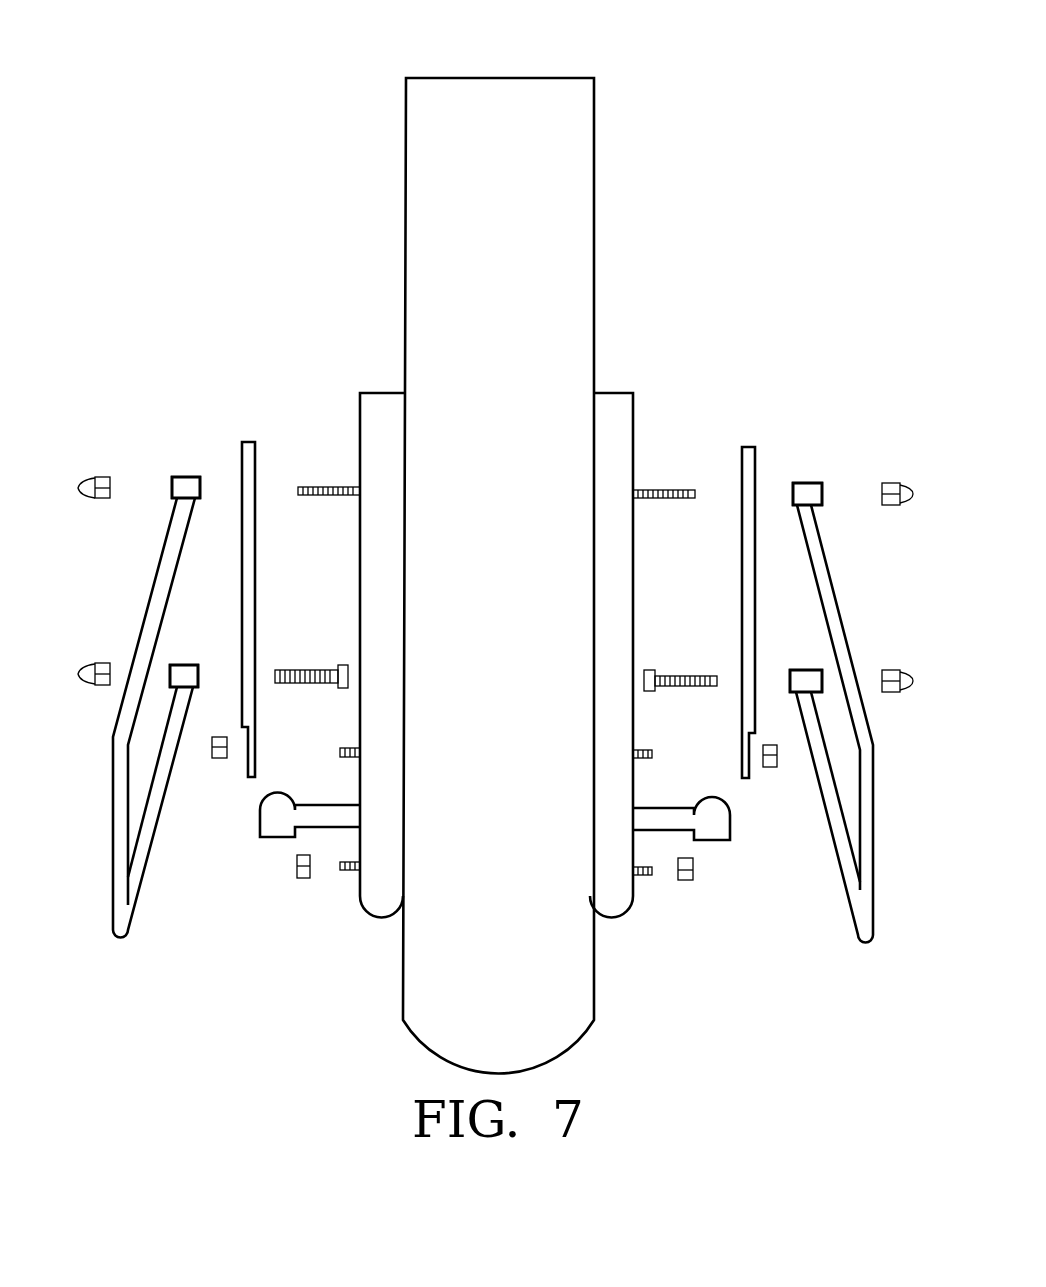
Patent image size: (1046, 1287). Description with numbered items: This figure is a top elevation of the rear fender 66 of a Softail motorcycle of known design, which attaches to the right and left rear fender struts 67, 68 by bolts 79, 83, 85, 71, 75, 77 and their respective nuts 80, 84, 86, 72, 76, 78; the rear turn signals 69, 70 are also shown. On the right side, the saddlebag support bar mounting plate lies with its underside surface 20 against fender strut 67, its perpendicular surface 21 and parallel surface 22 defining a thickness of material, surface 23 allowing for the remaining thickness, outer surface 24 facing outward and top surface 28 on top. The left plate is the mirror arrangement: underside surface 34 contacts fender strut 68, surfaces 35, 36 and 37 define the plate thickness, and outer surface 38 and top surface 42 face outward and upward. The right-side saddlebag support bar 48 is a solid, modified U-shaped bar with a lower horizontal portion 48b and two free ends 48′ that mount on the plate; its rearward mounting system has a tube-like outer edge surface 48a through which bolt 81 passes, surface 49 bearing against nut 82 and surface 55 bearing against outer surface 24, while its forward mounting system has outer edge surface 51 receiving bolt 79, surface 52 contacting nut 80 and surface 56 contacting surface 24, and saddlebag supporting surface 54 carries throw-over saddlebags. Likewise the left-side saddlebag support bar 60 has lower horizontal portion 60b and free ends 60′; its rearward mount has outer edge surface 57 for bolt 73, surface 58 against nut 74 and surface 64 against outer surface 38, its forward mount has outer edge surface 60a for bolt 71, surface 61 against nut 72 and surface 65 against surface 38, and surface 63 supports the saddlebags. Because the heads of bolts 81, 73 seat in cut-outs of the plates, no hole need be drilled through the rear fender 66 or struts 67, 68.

The rear fender 66 is at (418, 287).
The fender strut 67 is at (612, 418).
The rear fender strut 68 is at (372, 420).
The underside surface 20 is at (742, 620).
The surface 21 is at (740, 780).
The surface 22 is at (745, 765).
The surface 23 is at (752, 735).
The outer surface 24 is at (755, 458).
The top surface 28 is at (742, 557).
The underside surface 34 is at (255, 565).
The surface 35 is at (254, 777).
The surface 36 is at (246, 760).
The surface 37 is at (246, 732).
The outer surface 38 is at (242, 570).
The top surface 42 is at (253, 530).
The right-side saddlebag support bar 48 is at (872, 805).
The outer edge surface of rearward mounting system 48a is at (810, 670).
The lower horizontal portion 48b is at (872, 875).
The free ends 48′ is at (820, 485).
The surface 49 is at (822, 685).
The outer edge surface of forward mounting system 51 is at (805, 490).
The surface 52 is at (822, 493).
The saddlebag supporting surface 54 is at (832, 597).
The surface 55 is at (790, 682).
The surface 56 is at (793, 493).
The outer edge surface of rearward mounting system 57 is at (200, 665).
The surface 58 is at (172, 688).
The left-side saddlebag support bar 60 is at (157, 582).
The outer edge surface of forward mounting system 60a is at (192, 477).
The lower horizontal portion 60b is at (113, 858).
The free ends 60′ is at (185, 477).
The surface 61 is at (172, 488).
The saddlebag supporting surface 63 is at (120, 803).
The surface 64 is at (203, 682).
The surface 65 is at (203, 490).
The rear turn signal 69 is at (275, 836).
The rear turn signal 70 is at (715, 840).
The bolt 71 is at (350, 495).
The nut 72 is at (85, 497).
The bolt 73 is at (328, 688).
The nut 74 is at (83, 687).
The bolt 75 is at (350, 758).
The nut 76 is at (218, 760).
The bolt 77 is at (348, 872).
The nut 78 is at (298, 880).
The bolt 79 is at (644, 490).
The nut 80 is at (905, 485).
The bolt 81 is at (665, 672).
The nut 82 is at (905, 672).
The bolt 83 is at (645, 752).
The nut 84 is at (775, 767).
The bolt 85 is at (640, 876).
The nut 86 is at (688, 880).